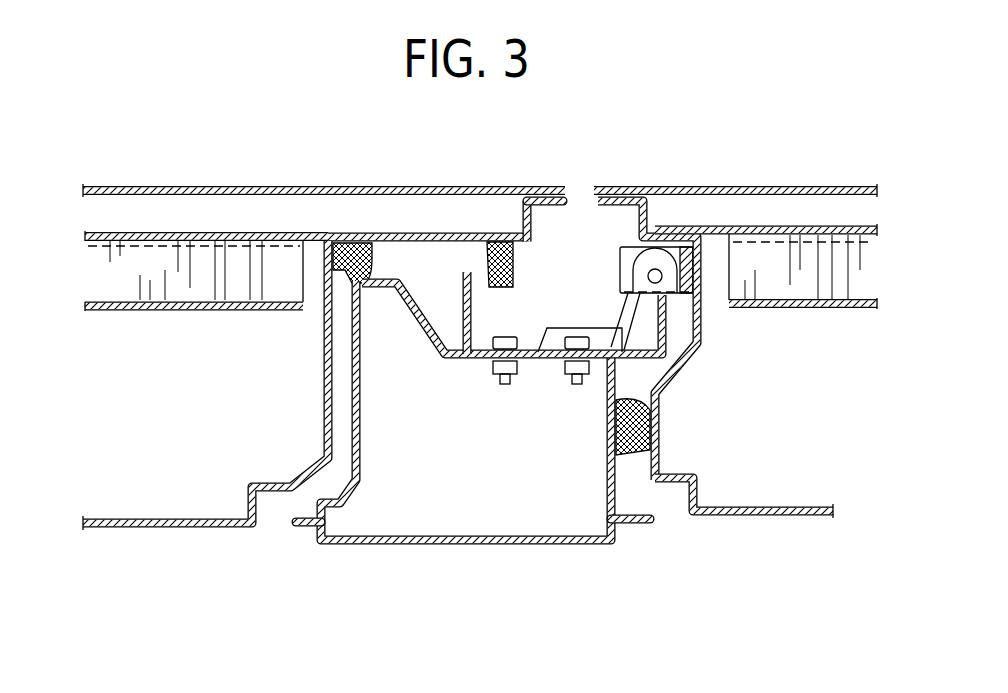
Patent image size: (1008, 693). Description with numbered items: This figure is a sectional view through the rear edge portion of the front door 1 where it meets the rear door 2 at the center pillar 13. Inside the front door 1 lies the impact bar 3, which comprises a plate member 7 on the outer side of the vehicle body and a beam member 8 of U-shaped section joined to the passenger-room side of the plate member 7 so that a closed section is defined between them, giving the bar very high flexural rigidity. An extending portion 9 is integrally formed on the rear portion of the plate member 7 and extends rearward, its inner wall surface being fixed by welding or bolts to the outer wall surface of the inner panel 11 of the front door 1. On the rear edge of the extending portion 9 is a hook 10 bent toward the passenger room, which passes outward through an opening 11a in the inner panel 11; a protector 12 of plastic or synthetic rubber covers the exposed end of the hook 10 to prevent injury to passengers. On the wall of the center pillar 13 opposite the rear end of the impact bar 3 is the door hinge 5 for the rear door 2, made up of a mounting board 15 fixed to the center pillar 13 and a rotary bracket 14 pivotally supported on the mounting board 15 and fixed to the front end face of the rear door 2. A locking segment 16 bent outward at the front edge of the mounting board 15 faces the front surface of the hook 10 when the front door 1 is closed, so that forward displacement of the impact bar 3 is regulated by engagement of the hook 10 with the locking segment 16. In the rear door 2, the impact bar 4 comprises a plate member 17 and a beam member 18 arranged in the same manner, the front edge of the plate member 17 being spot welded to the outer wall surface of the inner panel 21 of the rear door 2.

The front door 1 is at (324, 180).
The rear door 2 is at (772, 176).
The impact bar 3 is at (206, 315).
The impact bar 4 is at (766, 270).
The door hinge 5 is at (659, 372).
The plate member 7 is at (205, 185).
The beam member 8 is at (205, 312).
The extending portion 9 is at (400, 187).
The hook 10 is at (470, 187).
The inner panel 11 is at (140, 530).
The opening 11a is at (505, 187).
The protector 12 is at (513, 275).
The center pillar 13 is at (486, 553).
The rotary bracket 14 is at (622, 253).
The mounting board 15 is at (546, 366).
The locking segment 16 is at (462, 287).
The plate member 17 is at (850, 226).
The beam member 18 is at (828, 312).
The inner panel 21 is at (762, 522).